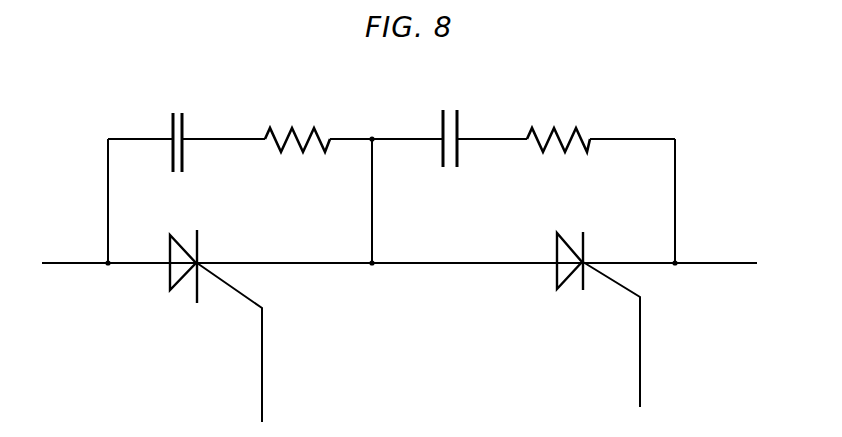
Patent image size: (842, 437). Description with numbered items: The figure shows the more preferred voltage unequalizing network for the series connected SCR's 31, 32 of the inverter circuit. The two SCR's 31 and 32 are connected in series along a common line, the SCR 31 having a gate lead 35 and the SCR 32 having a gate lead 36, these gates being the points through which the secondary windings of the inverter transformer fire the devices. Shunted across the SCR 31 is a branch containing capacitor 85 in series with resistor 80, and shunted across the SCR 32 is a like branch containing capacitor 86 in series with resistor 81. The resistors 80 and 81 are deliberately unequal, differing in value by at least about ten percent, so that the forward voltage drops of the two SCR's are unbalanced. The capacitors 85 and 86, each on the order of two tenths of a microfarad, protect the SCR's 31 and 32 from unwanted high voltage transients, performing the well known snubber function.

The capacitor 85 is at (171, 121).
The unequalizing network shunt resistor 80 is at (310, 131).
The capacitor 86 is at (457, 115).
The unequalizing network shunt resistor 81 is at (580, 126).
The SCR 31 is at (170, 276).
The SCR 32 is at (556, 264).
The gate lead 35 is at (243, 296).
The gate lead 36 is at (641, 327).